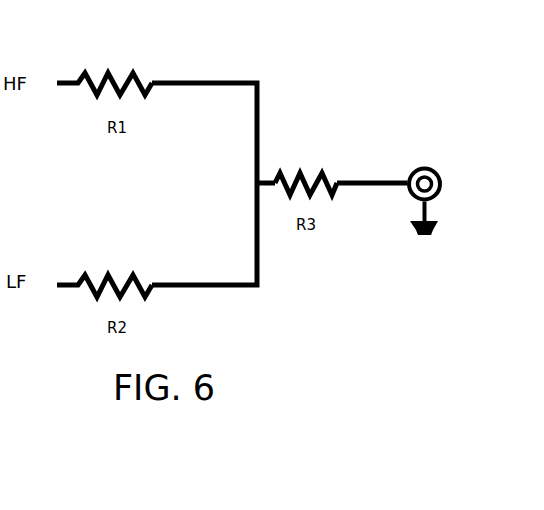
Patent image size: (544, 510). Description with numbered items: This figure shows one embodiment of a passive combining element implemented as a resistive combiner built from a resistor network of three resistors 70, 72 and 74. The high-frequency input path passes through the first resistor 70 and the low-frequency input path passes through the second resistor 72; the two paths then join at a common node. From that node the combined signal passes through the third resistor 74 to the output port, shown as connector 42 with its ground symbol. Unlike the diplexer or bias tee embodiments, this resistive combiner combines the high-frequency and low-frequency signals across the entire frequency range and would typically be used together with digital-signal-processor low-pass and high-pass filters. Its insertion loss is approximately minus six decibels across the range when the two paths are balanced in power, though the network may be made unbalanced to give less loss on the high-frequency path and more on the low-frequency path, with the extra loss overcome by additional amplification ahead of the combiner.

The resistor 70 is at (137, 70).
The resistor 72 is at (115, 278).
The resistor 74 is at (323, 172).
The connector 42 is at (438, 167).